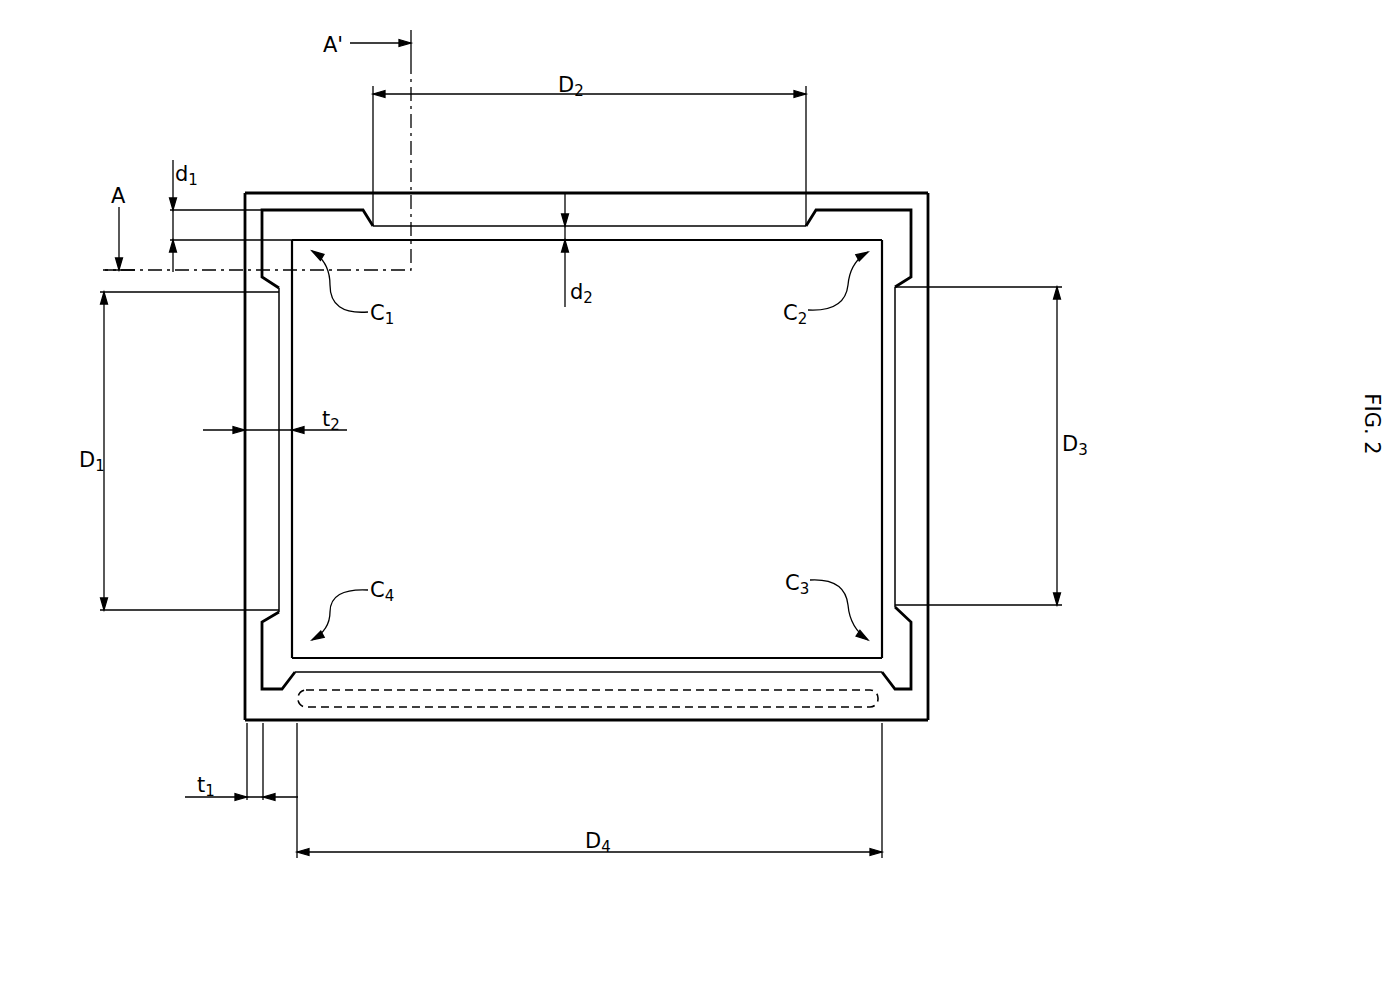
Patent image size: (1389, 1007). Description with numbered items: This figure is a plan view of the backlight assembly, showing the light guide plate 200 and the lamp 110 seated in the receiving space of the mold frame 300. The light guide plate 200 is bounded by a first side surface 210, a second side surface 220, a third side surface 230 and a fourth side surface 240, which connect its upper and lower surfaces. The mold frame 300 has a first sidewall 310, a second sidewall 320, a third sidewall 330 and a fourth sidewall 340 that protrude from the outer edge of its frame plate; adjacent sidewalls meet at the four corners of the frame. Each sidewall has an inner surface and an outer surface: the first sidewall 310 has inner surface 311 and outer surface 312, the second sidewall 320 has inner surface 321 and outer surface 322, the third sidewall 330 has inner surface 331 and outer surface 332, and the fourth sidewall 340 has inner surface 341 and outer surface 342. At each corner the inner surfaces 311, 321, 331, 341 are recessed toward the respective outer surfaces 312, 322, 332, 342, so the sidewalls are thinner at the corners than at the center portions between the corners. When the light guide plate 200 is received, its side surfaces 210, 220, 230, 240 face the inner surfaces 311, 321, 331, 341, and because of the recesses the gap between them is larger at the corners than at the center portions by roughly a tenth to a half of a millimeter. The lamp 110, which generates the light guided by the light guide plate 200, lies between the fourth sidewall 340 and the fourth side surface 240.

The lamp 110 is at (727, 707).
The light guide plate 200 is at (642, 479).
The first side surface 210 is at (292, 358).
The second side surface 220 is at (722, 240).
The third side surface 230 is at (882, 343).
The fourth side surface 240 is at (592, 657).
The mold frame 300 is at (940, 185).
The first sidewall 310 is at (196, 456).
The inner surface of first sidewall 311 is at (279, 556).
The outer surface of first sidewall 312 is at (246, 480).
The second sidewall 320 is at (586, 164).
The inner surface of second sidewall 321 is at (457, 226).
The outer surface of second sidewall 322 is at (547, 193).
The third sidewall 330 is at (975, 456).
The inner surface of third sidewall 331 is at (895, 555).
The outer surface of third sidewall 332 is at (928, 478).
The fourth sidewall 340 is at (586, 762).
The inner surface of fourth sidewall 341 is at (410, 672).
The outer surface of fourth sidewall 342 is at (437, 801).